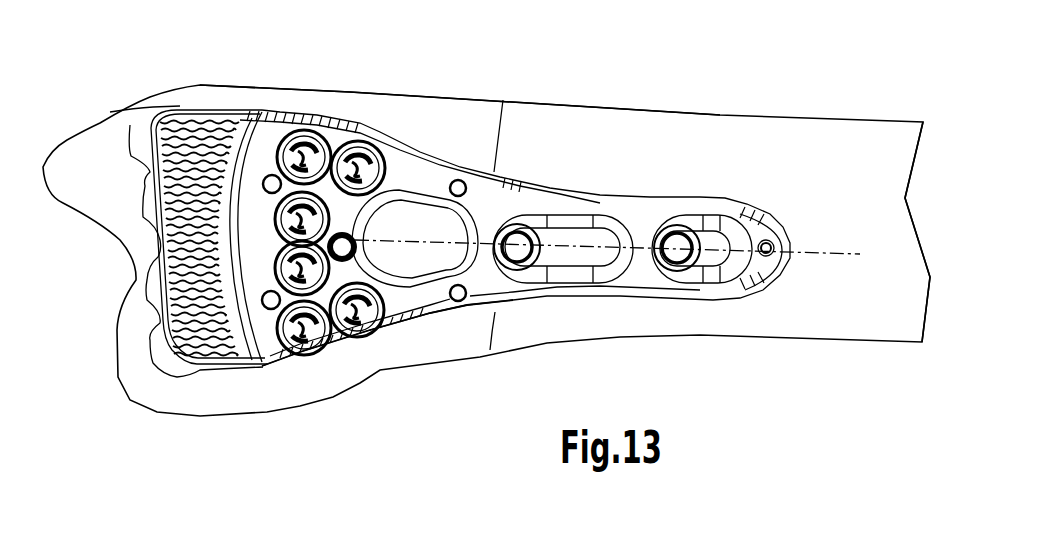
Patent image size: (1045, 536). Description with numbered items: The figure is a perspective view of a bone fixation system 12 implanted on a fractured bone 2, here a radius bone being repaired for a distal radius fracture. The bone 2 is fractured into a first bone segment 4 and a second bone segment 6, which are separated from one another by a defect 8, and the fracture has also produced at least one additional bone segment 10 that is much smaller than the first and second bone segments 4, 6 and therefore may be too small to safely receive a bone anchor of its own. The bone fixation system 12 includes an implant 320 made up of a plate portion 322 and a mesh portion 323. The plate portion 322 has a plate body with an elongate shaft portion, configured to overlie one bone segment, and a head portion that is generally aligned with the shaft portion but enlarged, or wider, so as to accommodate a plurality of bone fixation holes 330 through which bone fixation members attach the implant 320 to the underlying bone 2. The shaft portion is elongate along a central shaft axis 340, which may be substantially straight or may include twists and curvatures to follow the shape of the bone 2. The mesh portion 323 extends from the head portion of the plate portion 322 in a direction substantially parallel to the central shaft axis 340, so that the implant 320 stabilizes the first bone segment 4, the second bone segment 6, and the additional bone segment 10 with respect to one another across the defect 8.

The bone 2 is at (822, 122).
The first bone segment 4 is at (882, 160).
The second bone segment 6 is at (443, 128).
The defect 8 is at (500, 137).
The additional bone segment 10 is at (137, 145).
The bone fixation system 12 is at (643, 188).
The implant 320 is at (645, 228).
The plate portion 322 is at (508, 298).
The mesh portion 323 is at (230, 110).
The bone fixation holes 330 is at (368, 130).
The central shaft axis 340 is at (825, 252).